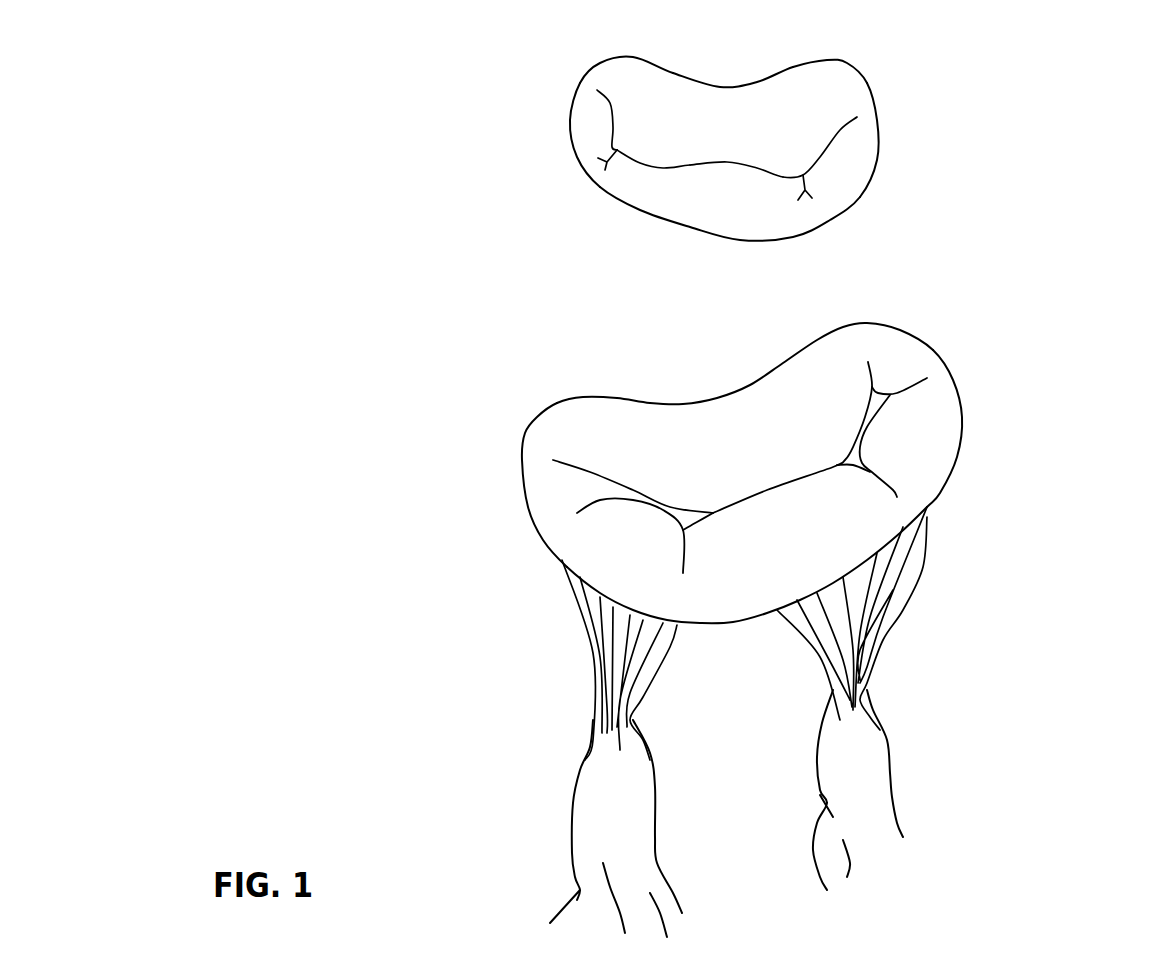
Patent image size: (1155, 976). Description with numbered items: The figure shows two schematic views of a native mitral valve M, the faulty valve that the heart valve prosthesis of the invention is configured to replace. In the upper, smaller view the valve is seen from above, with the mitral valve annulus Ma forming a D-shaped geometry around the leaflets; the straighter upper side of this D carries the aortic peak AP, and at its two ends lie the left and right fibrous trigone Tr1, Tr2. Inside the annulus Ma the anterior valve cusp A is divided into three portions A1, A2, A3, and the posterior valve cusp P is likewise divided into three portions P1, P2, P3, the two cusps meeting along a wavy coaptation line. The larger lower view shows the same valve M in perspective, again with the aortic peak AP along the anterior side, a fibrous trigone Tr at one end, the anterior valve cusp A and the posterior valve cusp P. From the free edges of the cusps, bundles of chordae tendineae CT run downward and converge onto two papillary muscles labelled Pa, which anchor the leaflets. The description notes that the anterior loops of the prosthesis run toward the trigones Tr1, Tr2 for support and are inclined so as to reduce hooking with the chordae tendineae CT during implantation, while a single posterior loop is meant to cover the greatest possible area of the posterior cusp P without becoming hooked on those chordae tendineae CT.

The mitral valve M is at (938, 111).
The mitral valve annulus Ma is at (702, 506).
The fibrous trigone Tr is at (544, 460).
The left fibrous trigone Tr1 is at (626, 53).
The right fibrous trigone Tr2 is at (830, 53).
The aortic peak AP is at (745, 226).
The anterior valve cusp A is at (740, 437).
The portion of the anterior valve cusp A1 is at (653, 129).
The portion of the anterior valve cusp A2 is at (736, 146).
The portion of the anterior valve cusp A3 is at (820, 134).
The posterior valve cusp P is at (747, 565).
The portion of the posterior valve cusp P1 is at (593, 135).
The portion of the posterior valve cusp P2 is at (730, 214).
The portion of the posterior valve cusp P3 is at (829, 175).
The chordae tendineae CT is at (755, 633).
The papillary muscle Pa is at (726, 813).